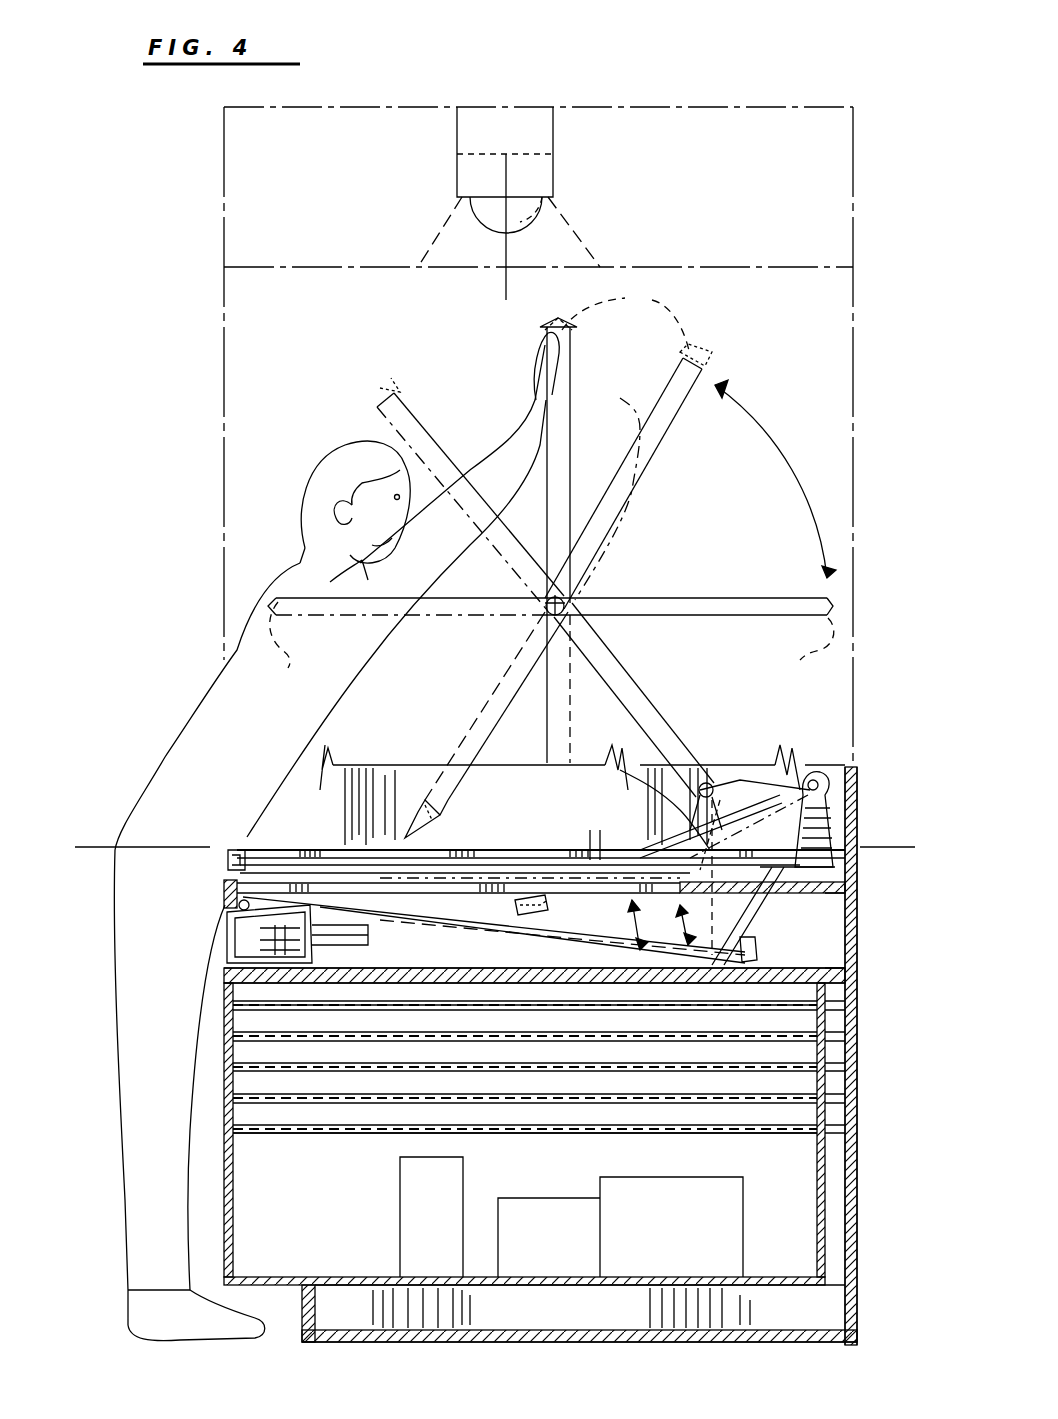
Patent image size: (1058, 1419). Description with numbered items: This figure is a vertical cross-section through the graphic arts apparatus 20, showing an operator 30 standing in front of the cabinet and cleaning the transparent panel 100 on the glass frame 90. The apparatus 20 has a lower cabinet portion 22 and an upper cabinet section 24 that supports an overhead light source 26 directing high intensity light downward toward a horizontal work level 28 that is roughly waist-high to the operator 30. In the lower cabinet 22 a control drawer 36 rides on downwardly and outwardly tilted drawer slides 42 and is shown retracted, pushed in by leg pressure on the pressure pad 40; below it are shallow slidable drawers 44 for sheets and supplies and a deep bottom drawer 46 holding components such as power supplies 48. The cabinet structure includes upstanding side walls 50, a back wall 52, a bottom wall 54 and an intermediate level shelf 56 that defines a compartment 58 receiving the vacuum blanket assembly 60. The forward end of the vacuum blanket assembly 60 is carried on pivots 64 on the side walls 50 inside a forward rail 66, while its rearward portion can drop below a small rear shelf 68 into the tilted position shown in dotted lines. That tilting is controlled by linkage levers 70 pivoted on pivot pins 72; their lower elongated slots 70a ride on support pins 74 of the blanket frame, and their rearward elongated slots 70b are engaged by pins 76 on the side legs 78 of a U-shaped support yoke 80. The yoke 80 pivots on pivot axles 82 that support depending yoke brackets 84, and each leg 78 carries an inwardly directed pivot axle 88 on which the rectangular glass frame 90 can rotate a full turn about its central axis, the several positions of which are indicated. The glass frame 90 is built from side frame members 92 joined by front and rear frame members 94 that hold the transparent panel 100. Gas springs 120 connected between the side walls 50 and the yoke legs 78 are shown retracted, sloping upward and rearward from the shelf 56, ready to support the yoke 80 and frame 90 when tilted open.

The graphic arts apparatus 20 is at (345, 1352).
The lower cabinet portion 22 is at (224, 1222).
The upper cabinet section 24 is at (228, 232).
The overhead light source 26 is at (530, 206).
The horizontal work level 28 is at (886, 847).
The operator 30 is at (188, 770).
The control drawer 36 is at (330, 927).
The pressure pad 40 is at (225, 945).
The drawer slides 42 is at (350, 950).
The slidable drawers 44 is at (224, 1129).
The bottom drawer 46 is at (224, 1150).
The power supplies 48 is at (615, 1190).
The side walls 50 is at (795, 326).
The back wall 52 is at (845, 938).
The bottom wall 54 is at (515, 1320).
The intermediate level shelf 56 is at (455, 945).
The compartment 58 is at (845, 914).
The vacuum blanket assembly 60 is at (620, 900).
The pivots 64 is at (225, 905).
The forward rail 66 is at (222, 884).
The rear shelf 68 is at (760, 885).
The linkage levers 70 is at (690, 830).
The elongated slots 70a is at (548, 912).
The elongated slots 70b is at (676, 782).
The pivot pins 72 is at (594, 845).
The support pins 74 is at (510, 927).
The pins 76 is at (710, 782).
The side legs 78 is at (640, 684).
The support yoke 80 is at (788, 780).
The pivot axles 82 is at (815, 780).
The yoke brackets 84 is at (850, 888).
The pivot axle 88 is at (568, 600).
The glass frame 90 is at (560, 335).
The side frame members 92 is at (545, 435).
The front and rear frame members 94 is at (550, 488).
The transparent panel 100 is at (465, 862).
The gas springs 120 is at (820, 983).